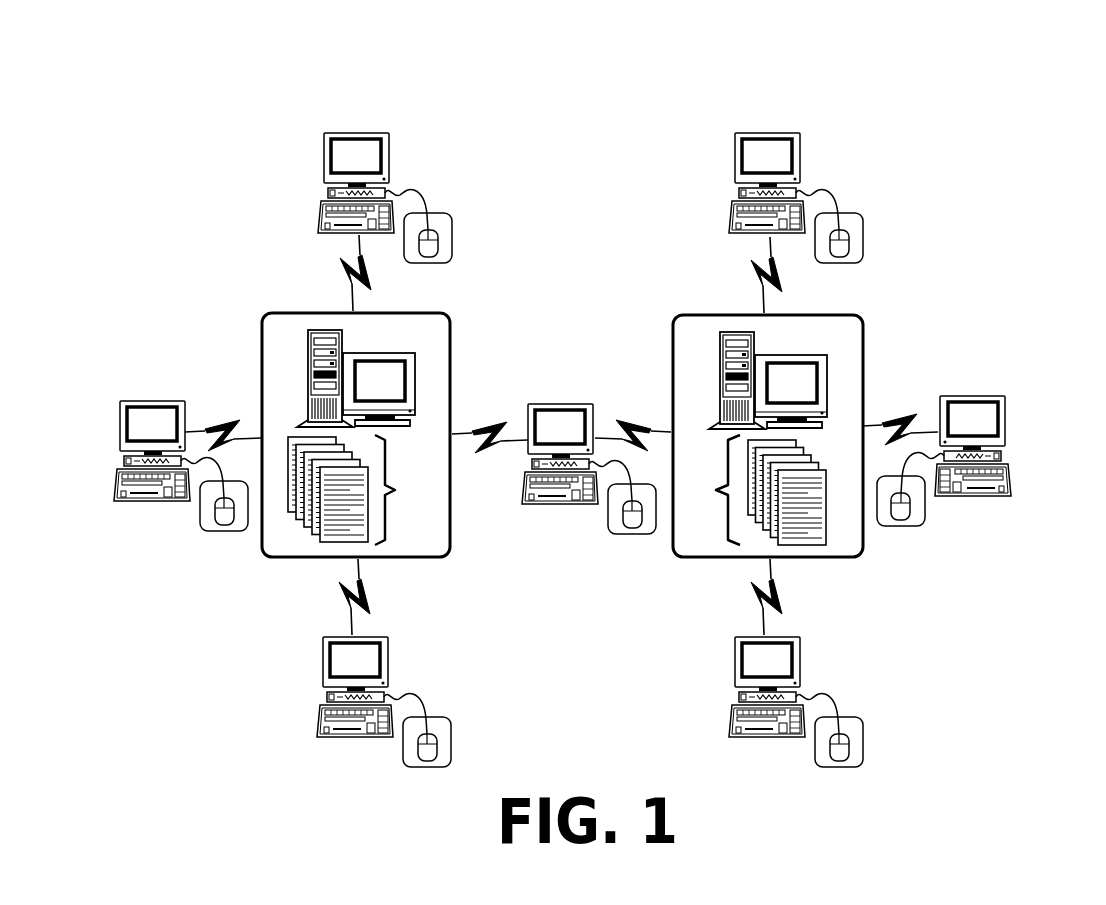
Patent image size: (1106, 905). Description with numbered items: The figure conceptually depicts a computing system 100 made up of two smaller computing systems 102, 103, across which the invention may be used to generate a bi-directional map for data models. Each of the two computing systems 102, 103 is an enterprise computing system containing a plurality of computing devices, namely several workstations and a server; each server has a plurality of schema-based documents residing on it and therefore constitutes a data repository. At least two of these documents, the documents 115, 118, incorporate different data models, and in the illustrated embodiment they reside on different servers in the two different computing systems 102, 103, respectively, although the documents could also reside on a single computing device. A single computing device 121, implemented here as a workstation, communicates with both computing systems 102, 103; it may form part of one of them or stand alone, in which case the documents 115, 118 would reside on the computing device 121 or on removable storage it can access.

The computing system 100 is at (326, 44).
The computing system 102 is at (226, 123).
The computing system 103 is at (920, 128).
The document 115 is at (340, 536).
The document 118 is at (805, 546).
The computing device 121 is at (563, 538).